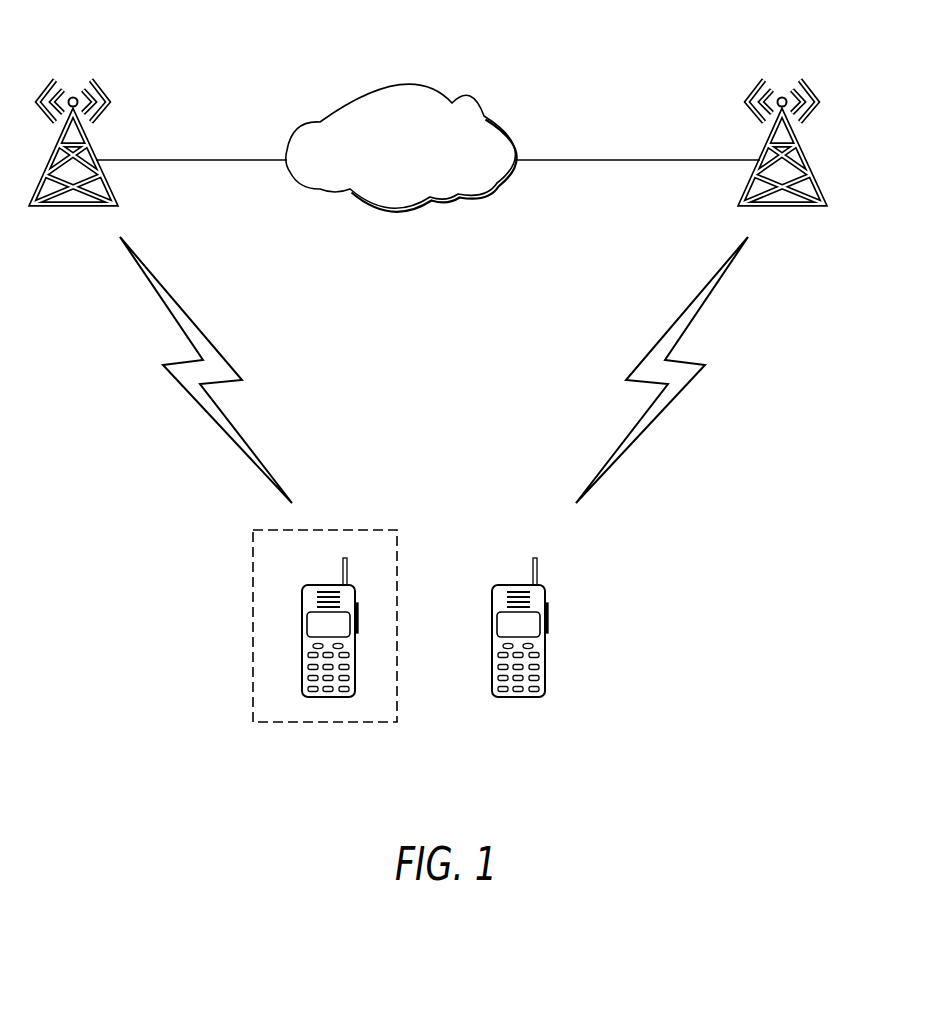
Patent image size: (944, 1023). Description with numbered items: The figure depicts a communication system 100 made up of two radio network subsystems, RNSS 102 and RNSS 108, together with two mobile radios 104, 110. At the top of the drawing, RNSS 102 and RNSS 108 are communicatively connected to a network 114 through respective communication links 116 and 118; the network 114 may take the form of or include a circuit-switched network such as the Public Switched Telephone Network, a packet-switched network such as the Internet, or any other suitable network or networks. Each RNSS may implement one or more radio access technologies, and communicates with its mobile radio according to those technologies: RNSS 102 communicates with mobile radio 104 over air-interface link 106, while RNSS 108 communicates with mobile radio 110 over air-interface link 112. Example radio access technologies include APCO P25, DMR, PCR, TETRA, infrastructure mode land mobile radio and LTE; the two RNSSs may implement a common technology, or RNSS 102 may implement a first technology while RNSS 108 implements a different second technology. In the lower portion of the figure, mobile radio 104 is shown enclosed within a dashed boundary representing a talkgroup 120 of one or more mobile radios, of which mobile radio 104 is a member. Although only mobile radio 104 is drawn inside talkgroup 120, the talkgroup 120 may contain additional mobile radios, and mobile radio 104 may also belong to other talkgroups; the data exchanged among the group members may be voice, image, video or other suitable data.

The communication system 100 is at (63, 27).
The RNSS 102 is at (99, 93).
The mobile radio 104 is at (302, 640).
The air-interface link 106 is at (210, 413).
The RNSS 108 is at (808, 93).
The mobile radio 110 is at (545, 668).
The air-interface link 112 is at (653, 420).
The network 114 is at (473, 103).
The communication link 116 is at (203, 159).
The communication link 118 is at (614, 159).
The talkgroup 120 is at (365, 530).